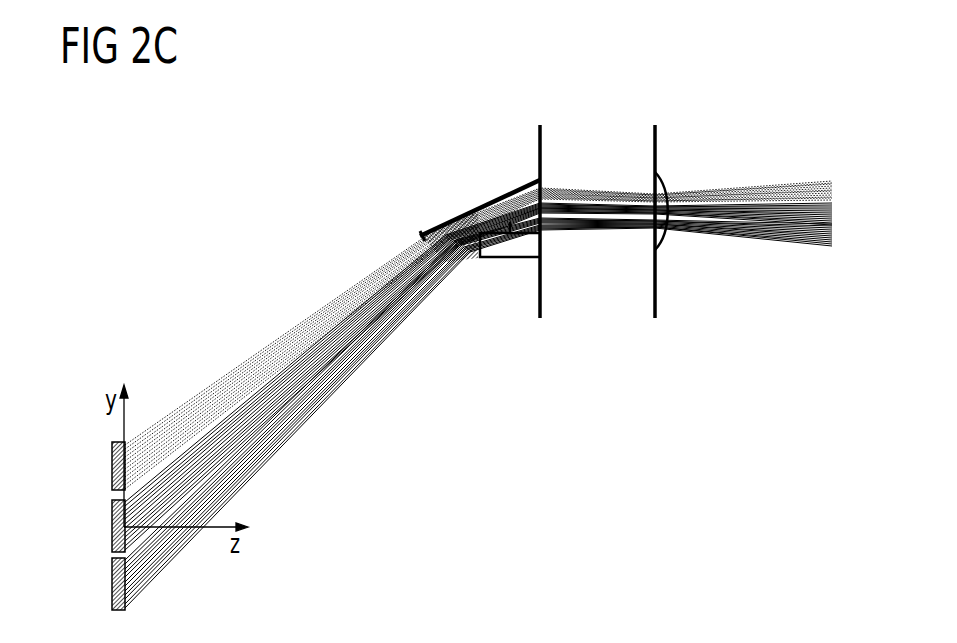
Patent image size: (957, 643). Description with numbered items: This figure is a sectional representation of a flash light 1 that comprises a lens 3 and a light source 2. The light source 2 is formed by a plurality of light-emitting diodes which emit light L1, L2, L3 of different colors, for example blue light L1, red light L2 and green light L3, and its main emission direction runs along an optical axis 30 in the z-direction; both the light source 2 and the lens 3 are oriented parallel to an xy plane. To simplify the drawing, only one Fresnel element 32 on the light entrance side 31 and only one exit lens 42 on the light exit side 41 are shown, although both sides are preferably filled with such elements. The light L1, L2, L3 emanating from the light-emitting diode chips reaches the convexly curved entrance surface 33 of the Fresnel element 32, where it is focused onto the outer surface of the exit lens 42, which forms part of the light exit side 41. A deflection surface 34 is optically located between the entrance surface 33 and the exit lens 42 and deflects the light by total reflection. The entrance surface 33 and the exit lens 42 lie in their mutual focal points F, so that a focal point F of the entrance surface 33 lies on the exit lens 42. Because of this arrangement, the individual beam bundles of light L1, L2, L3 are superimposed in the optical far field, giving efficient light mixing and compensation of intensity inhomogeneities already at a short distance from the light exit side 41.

The flash light 1 is at (778, 88).
The light source 2 is at (141, 526).
The lens 3 is at (555, 277).
The optical axis 30 is at (215, 530).
The light entrance side 31 is at (537, 308).
The Fresnel element 32 is at (425, 233).
The entrance surface 33 is at (463, 260).
The deflection surface 34 is at (479, 208).
The light exit side 41 is at (657, 270).
The exit lens 42 is at (665, 185).
The focal point F is at (652, 195).
The blue light L1 is at (253, 443).
The red light L2 is at (195, 447).
The green light L3 is at (217, 393).